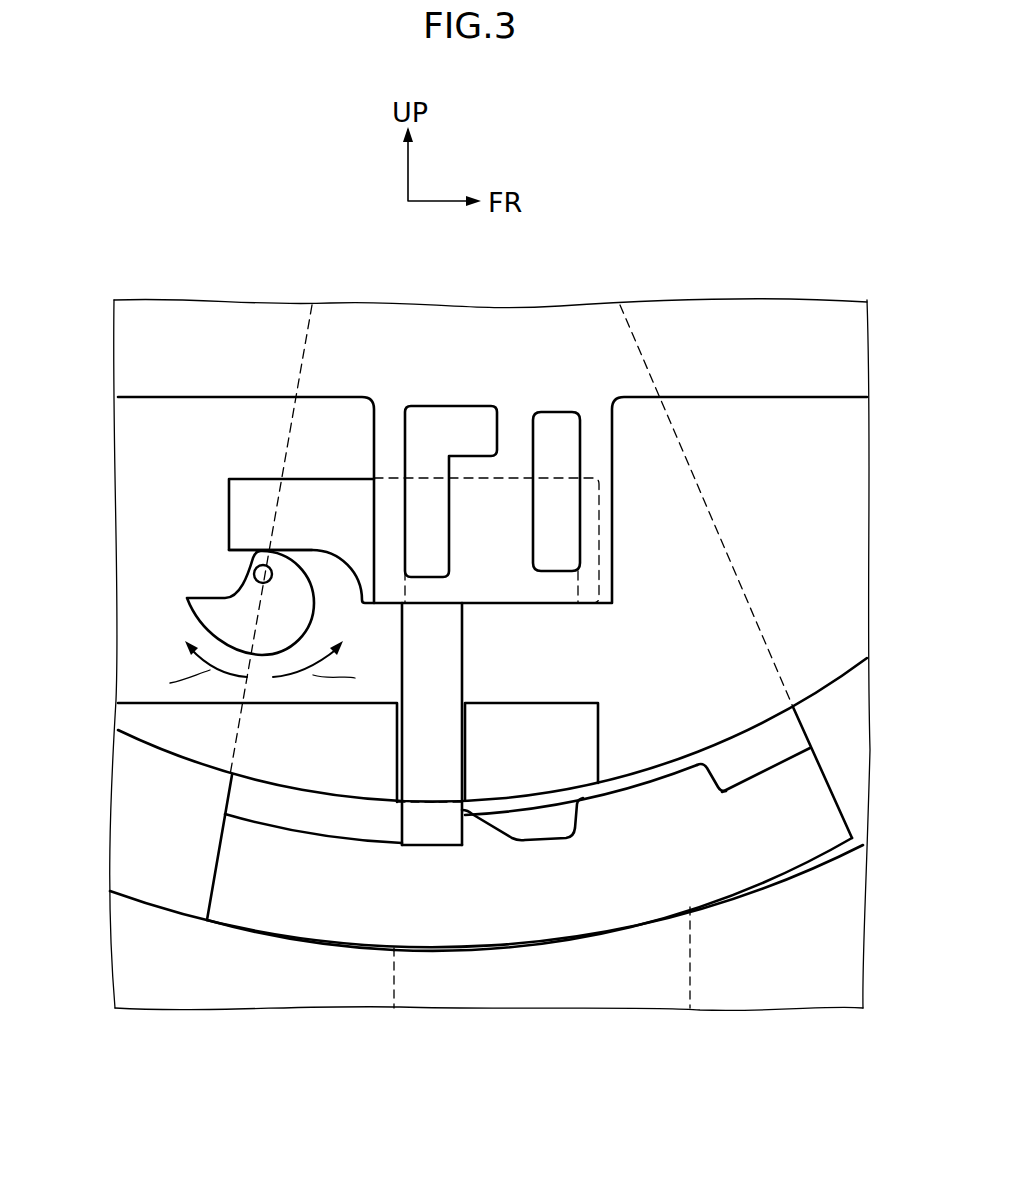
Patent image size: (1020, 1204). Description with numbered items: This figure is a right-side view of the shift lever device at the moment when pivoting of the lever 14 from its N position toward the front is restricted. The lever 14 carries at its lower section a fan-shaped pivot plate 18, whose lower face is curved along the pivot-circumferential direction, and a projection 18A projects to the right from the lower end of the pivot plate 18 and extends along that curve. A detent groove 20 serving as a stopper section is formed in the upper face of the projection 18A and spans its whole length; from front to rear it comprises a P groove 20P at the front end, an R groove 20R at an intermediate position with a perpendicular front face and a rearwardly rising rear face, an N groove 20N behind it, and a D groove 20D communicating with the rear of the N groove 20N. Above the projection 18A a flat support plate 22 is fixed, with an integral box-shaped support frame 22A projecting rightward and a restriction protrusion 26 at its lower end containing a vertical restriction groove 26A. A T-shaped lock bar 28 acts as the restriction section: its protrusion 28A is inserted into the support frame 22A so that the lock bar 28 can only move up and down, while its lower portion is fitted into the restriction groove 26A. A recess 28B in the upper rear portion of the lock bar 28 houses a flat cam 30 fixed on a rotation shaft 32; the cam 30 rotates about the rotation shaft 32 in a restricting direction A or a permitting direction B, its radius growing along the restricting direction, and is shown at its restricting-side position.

The lever 14 is at (220, 790).
The pivot plate 18 is at (808, 737).
The projection 18A is at (256, 910).
The detent groove 20 is at (232, 816).
The D groove 20D is at (326, 832).
The N groove 20N is at (428, 840).
The R groove 20R is at (560, 830).
The P groove 20P is at (760, 768).
The support plate 22 is at (133, 458).
The support frame 22A is at (613, 498).
The restriction protrusion 26 is at (598, 702).
The restriction groove 26A is at (398, 744).
The lock bar 28 is at (265, 478).
The protrusion 28A is at (563, 555).
The recess 28B is at (229, 556).
The cam 30 is at (314, 610).
The rotation shaft 32 is at (255, 578).